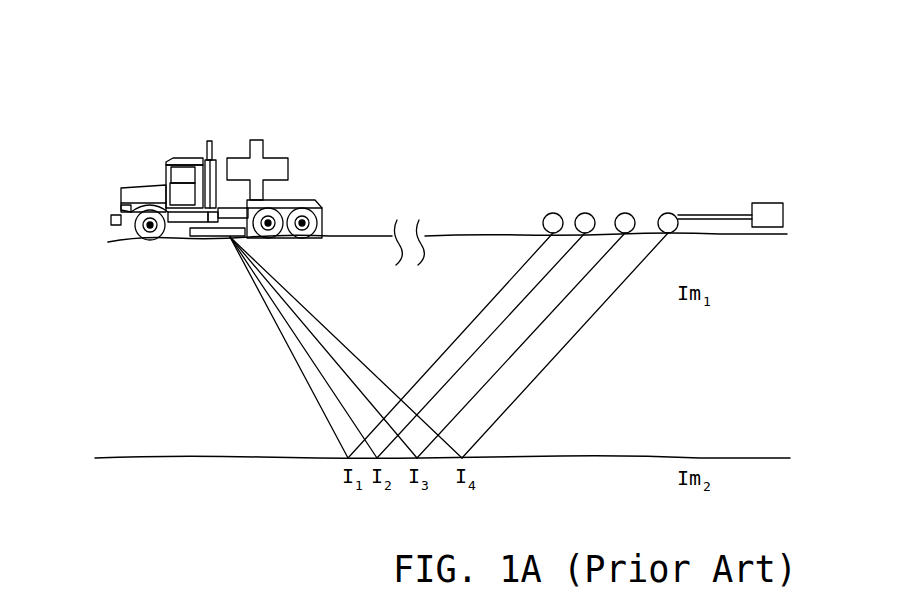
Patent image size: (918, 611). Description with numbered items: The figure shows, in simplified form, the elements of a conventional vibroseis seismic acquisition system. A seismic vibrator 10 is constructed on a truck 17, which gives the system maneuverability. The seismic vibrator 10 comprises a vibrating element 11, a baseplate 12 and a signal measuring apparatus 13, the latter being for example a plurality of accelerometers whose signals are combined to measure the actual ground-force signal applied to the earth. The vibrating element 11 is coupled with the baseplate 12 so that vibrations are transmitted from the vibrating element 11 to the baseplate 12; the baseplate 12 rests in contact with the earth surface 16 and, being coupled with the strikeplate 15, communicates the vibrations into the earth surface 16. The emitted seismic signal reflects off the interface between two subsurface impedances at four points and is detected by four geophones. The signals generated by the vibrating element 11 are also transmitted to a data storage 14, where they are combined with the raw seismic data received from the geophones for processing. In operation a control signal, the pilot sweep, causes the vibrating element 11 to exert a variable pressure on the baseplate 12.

The seismic vibrator 10 is at (130, 139).
The vibrating element 11 is at (276, 155).
The baseplate 12 is at (217, 240).
The signal measuring apparatus 13 is at (245, 242).
The data storage 14 is at (757, 203).
The strikeplate 15 is at (317, 198).
The earth surface 16 is at (108, 242).
The truck 17 is at (193, 158).